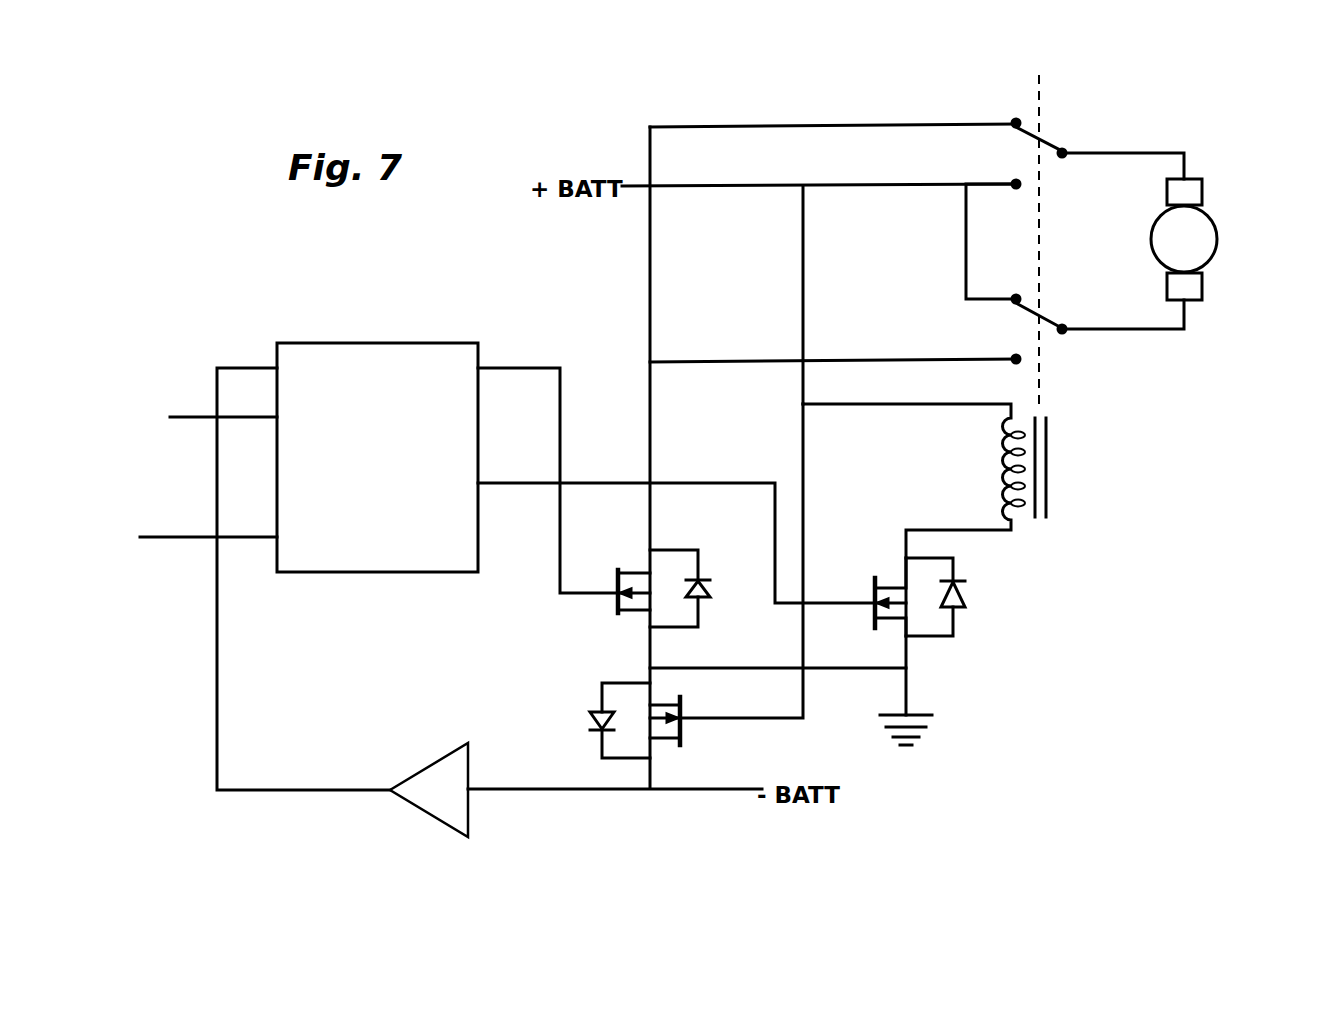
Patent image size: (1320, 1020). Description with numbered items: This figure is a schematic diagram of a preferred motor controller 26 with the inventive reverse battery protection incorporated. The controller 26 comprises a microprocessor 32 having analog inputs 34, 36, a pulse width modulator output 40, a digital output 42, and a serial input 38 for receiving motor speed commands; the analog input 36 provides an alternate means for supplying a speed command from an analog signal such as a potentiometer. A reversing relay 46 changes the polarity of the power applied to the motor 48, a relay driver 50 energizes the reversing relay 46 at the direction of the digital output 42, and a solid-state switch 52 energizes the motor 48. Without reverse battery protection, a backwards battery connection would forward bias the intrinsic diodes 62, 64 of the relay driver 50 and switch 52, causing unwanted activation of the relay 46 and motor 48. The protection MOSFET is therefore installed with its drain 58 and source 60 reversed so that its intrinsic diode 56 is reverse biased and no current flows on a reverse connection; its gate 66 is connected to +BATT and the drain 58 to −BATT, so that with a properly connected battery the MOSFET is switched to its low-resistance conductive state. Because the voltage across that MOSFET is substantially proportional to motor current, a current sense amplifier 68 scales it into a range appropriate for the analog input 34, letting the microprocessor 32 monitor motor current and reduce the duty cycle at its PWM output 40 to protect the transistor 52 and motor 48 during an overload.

The controller 26 is at (1155, 140).
The microprocessor 32 is at (458, 340).
The analog input 34 is at (245, 367).
The analog input 36 is at (240, 415).
The serial input 38 is at (255, 545).
The pulse width modulator output 40 is at (517, 367).
The digital output 42 is at (510, 482).
The reversing relay 46 is at (1040, 250).
The motor 48 is at (1217, 226).
The relay driver 50 is at (895, 603).
The solid-state switch 52 is at (643, 593).
The intrinsic diode 56 is at (585, 712).
The drain 58 is at (667, 737).
The source 60 is at (652, 682).
The intrinsic diode 62 is at (963, 593).
The intrinsic diode 64 is at (705, 582).
The gate 66 is at (742, 720).
The current sense amplifier 68 is at (417, 773).